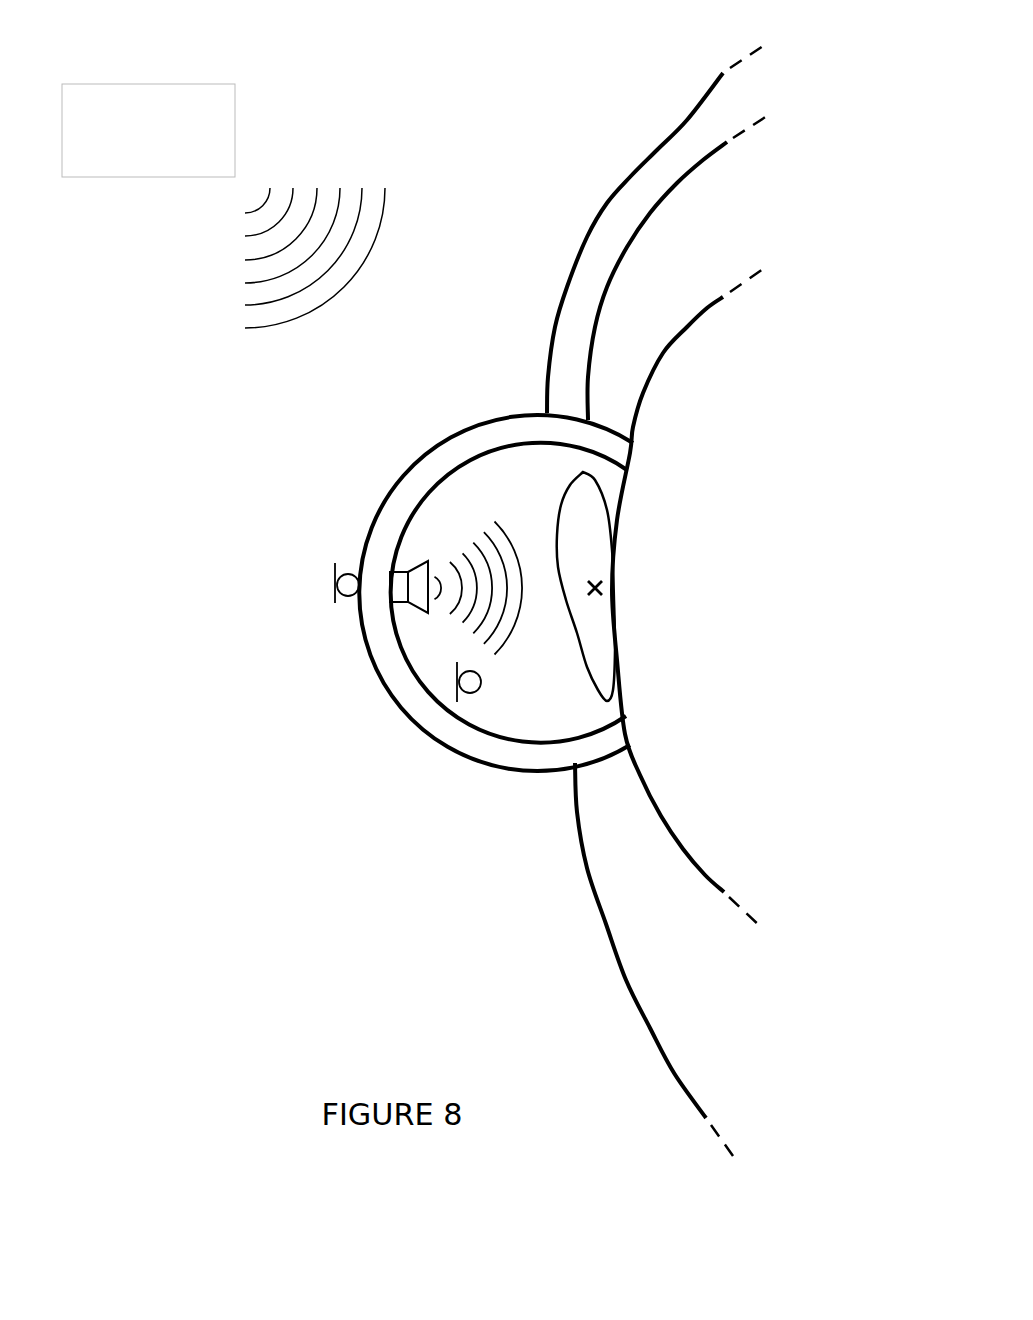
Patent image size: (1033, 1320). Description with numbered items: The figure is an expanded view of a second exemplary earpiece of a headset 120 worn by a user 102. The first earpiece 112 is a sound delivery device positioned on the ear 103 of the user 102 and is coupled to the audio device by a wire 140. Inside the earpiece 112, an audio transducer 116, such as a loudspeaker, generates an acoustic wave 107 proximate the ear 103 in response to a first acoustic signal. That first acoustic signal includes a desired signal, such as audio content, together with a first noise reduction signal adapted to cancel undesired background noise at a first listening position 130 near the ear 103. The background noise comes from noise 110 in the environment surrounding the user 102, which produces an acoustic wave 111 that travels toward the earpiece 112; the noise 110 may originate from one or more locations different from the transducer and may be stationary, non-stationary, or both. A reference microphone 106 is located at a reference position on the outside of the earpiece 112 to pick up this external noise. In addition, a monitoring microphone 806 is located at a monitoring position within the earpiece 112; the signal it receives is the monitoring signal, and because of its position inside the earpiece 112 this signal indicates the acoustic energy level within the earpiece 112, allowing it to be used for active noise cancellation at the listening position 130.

The noise 110 is at (148, 130).
The acoustic wave 111 is at (220, 235).
The headset 120 is at (608, 195).
The wire 140 is at (618, 955).
The user 102 is at (689, 597).
The first earpiece 112 is at (475, 427).
The ear 103 is at (603, 703).
The first listening position 130 is at (597, 603).
The audio transducer 116 is at (412, 573).
The acoustic wave 107 is at (449, 623).
The reference microphone 106 is at (343, 600).
The monitoring microphone 806 is at (465, 692).